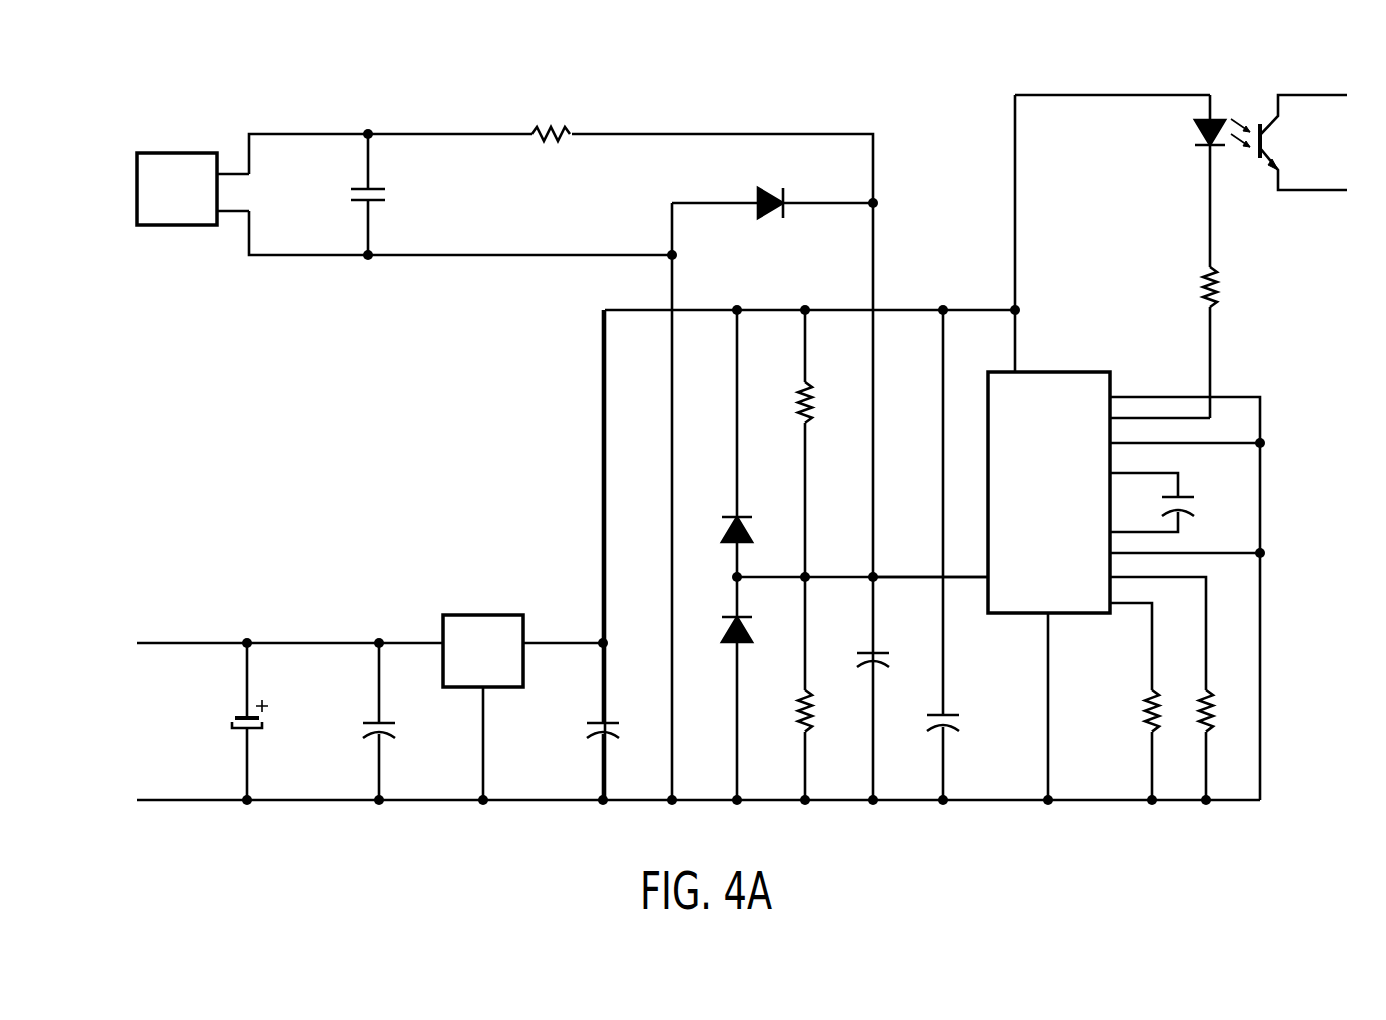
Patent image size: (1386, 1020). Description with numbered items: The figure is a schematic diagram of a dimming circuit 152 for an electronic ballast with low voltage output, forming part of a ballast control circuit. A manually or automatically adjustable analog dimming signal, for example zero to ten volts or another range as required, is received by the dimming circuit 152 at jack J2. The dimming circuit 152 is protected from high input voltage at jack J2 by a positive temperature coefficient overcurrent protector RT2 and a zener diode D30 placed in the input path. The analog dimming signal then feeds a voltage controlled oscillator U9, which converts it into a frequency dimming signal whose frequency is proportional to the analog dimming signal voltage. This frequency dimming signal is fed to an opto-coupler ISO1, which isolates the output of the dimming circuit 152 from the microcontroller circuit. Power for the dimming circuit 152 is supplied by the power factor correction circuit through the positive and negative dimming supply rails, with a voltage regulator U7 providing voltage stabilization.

The dimming circuit 152 is at (718, 420).
The jack J2 is at (193, 189).
The positive temperature coefficient (PTC) overcurrent protector RT2 is at (551, 118).
The zener diode D30 is at (772, 223).
The voltage regulator U7 is at (483, 651).
The voltage controlled oscillator U9 is at (1049, 492).
The opto-coupler ISO1 is at (1271, 142).